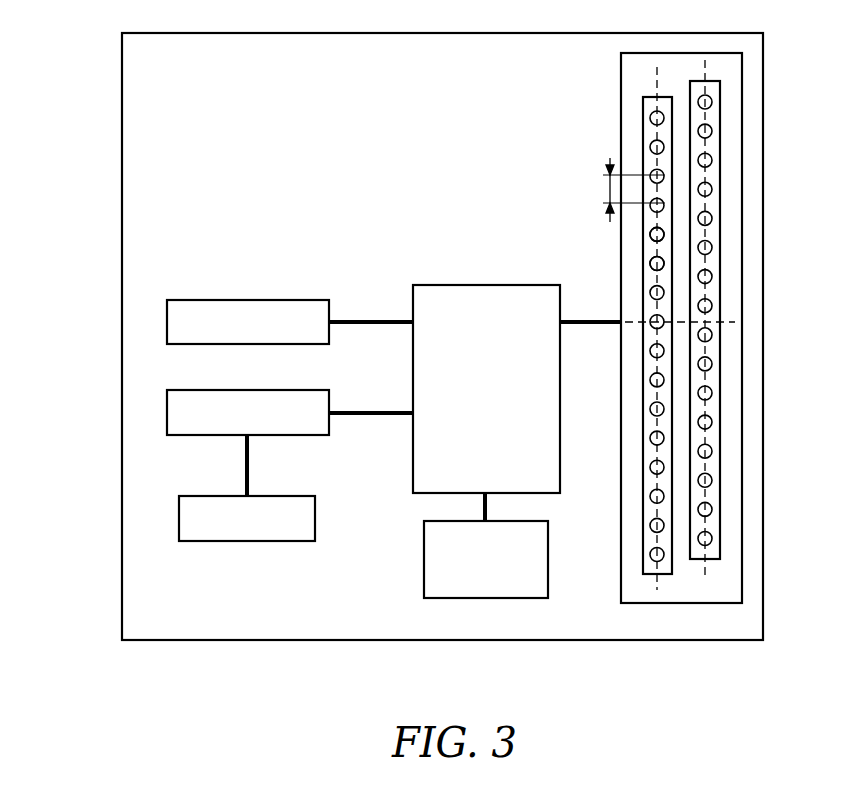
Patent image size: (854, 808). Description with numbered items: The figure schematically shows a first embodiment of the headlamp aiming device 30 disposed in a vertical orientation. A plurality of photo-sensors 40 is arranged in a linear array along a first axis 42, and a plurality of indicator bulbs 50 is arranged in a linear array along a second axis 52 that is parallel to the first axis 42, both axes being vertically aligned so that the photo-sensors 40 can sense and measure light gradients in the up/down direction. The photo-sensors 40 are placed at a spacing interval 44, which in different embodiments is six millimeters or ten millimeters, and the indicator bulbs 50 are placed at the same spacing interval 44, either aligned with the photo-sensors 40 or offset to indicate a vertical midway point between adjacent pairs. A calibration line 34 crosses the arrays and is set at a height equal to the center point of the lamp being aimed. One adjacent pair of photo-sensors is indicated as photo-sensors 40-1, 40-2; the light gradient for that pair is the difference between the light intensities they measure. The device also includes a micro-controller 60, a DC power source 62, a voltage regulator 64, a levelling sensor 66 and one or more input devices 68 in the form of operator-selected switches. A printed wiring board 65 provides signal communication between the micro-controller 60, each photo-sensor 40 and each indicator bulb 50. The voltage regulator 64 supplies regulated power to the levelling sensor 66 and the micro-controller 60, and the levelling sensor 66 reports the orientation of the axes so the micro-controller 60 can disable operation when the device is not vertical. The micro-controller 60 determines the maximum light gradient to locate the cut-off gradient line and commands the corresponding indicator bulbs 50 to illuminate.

The headlamp aiming device 30 is at (118, 218).
The calibration line 34 is at (730, 320).
The photo-sensors 40 is at (640, 138).
The first axis 42 is at (655, 72).
The spacing interval 44 is at (610, 190).
The photo-sensor 40-1 is at (649, 233).
The photo-sensor 40-2 is at (649, 263).
The indicator bulbs 50 is at (723, 177).
The second axis 52 is at (706, 75).
The micro-controller 60 is at (461, 285).
The DC power source 62 is at (192, 496).
The voltage regulator 64 is at (180, 390).
The printed wiring board 65 is at (596, 333).
The levelling sensor 66 is at (243, 300).
The input devices 68 is at (424, 547).